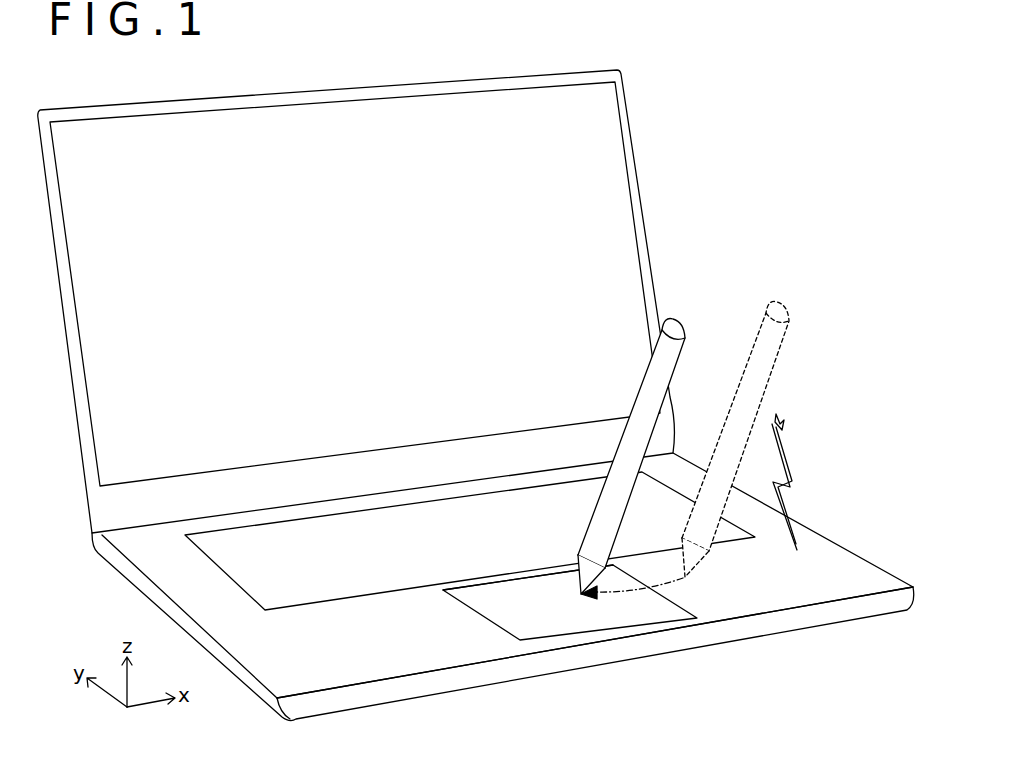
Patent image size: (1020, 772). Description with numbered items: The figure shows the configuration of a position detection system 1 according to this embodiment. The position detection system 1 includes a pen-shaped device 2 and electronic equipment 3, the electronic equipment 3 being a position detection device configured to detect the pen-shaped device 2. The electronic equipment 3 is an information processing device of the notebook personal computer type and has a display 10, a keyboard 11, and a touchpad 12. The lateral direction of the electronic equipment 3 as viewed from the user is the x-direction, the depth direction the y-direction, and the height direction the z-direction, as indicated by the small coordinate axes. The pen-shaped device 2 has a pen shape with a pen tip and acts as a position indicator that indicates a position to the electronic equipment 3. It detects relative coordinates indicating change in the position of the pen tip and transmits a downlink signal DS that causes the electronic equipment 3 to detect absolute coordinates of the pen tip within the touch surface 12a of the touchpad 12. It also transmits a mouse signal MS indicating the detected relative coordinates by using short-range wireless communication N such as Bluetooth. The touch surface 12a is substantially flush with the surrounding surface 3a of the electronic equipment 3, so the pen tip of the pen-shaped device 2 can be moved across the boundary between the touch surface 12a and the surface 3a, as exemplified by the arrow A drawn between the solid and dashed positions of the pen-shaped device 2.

The position detection system 1 is at (710, 163).
The pen-shaped device 2 is at (673, 356).
The electronic equipment 3 is at (649, 269).
The surface of the electronic equipment 3a is at (381, 612).
The display 10 is at (400, 105).
The keyboard 11 is at (371, 523).
The touchpad 12 is at (526, 590).
The touch surface 12a is at (484, 597).
The downlink signal DS is at (567, 584).
The arrow A is at (659, 578).
The mouse signal MS is at (785, 427).
The short-range wireless communication N is at (792, 487).